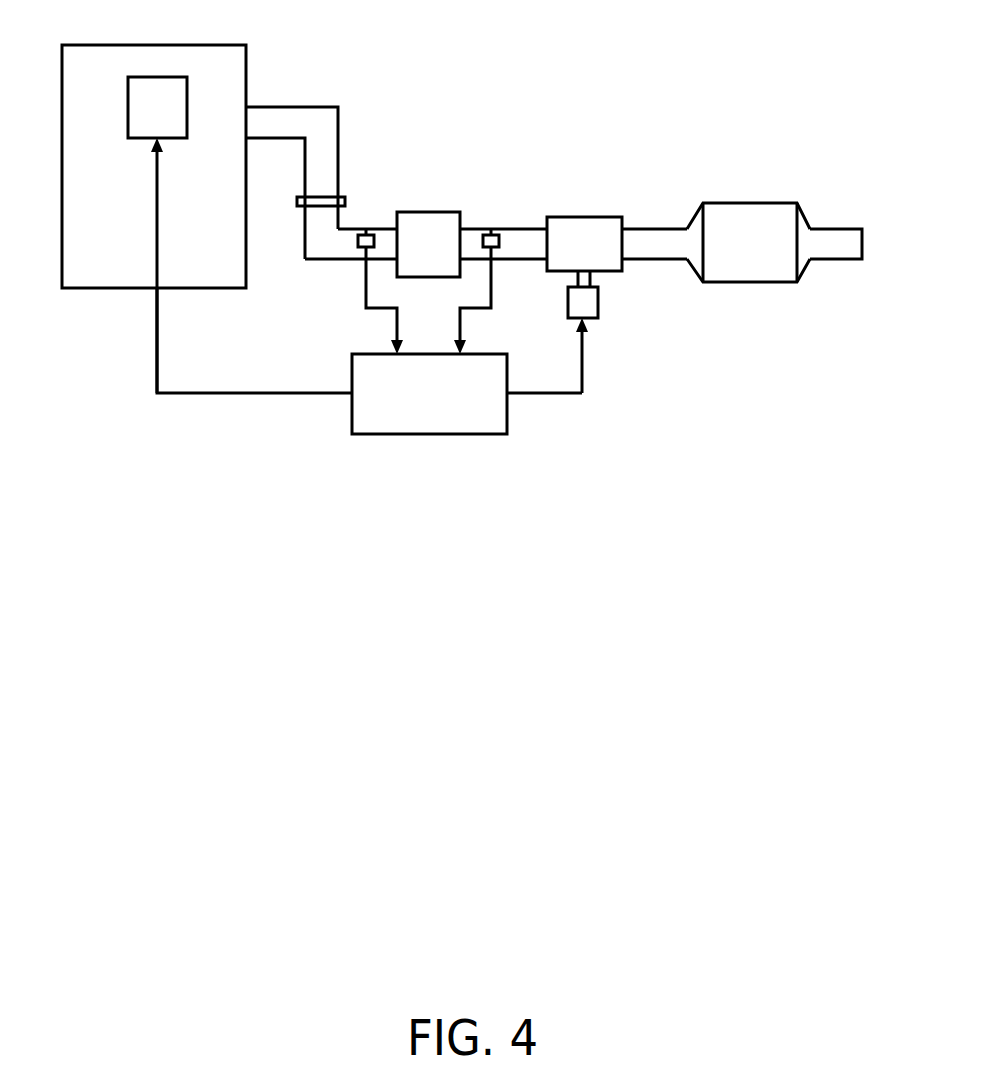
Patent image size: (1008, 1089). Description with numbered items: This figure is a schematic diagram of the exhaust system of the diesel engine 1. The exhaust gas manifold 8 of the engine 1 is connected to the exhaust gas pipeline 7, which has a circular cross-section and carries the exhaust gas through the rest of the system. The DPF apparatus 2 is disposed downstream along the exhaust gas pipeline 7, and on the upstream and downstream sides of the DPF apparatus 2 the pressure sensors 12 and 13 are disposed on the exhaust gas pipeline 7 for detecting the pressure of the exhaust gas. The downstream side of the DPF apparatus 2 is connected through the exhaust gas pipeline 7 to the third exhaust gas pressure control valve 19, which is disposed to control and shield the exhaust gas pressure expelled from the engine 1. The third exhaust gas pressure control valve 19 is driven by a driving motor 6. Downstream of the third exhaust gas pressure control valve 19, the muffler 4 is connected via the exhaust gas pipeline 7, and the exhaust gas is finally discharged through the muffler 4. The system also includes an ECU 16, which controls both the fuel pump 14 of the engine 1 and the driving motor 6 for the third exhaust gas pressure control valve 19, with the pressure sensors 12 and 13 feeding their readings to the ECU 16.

The diesel engine 1 is at (197, 45).
The fuel pump 14 is at (160, 83).
The exhaust gas manifold 8 is at (283, 105).
The exhaust gas pipeline 7 is at (323, 248).
The DPF apparatus 2 is at (432, 257).
The pressure sensor 12 is at (367, 232).
The pressure sensor 13 is at (490, 232).
The third exhaust gas pressure control valve 19 is at (580, 222).
The driving motor 6 is at (588, 305).
The muffler 4 is at (749, 207).
The ECU 16 is at (358, 380).